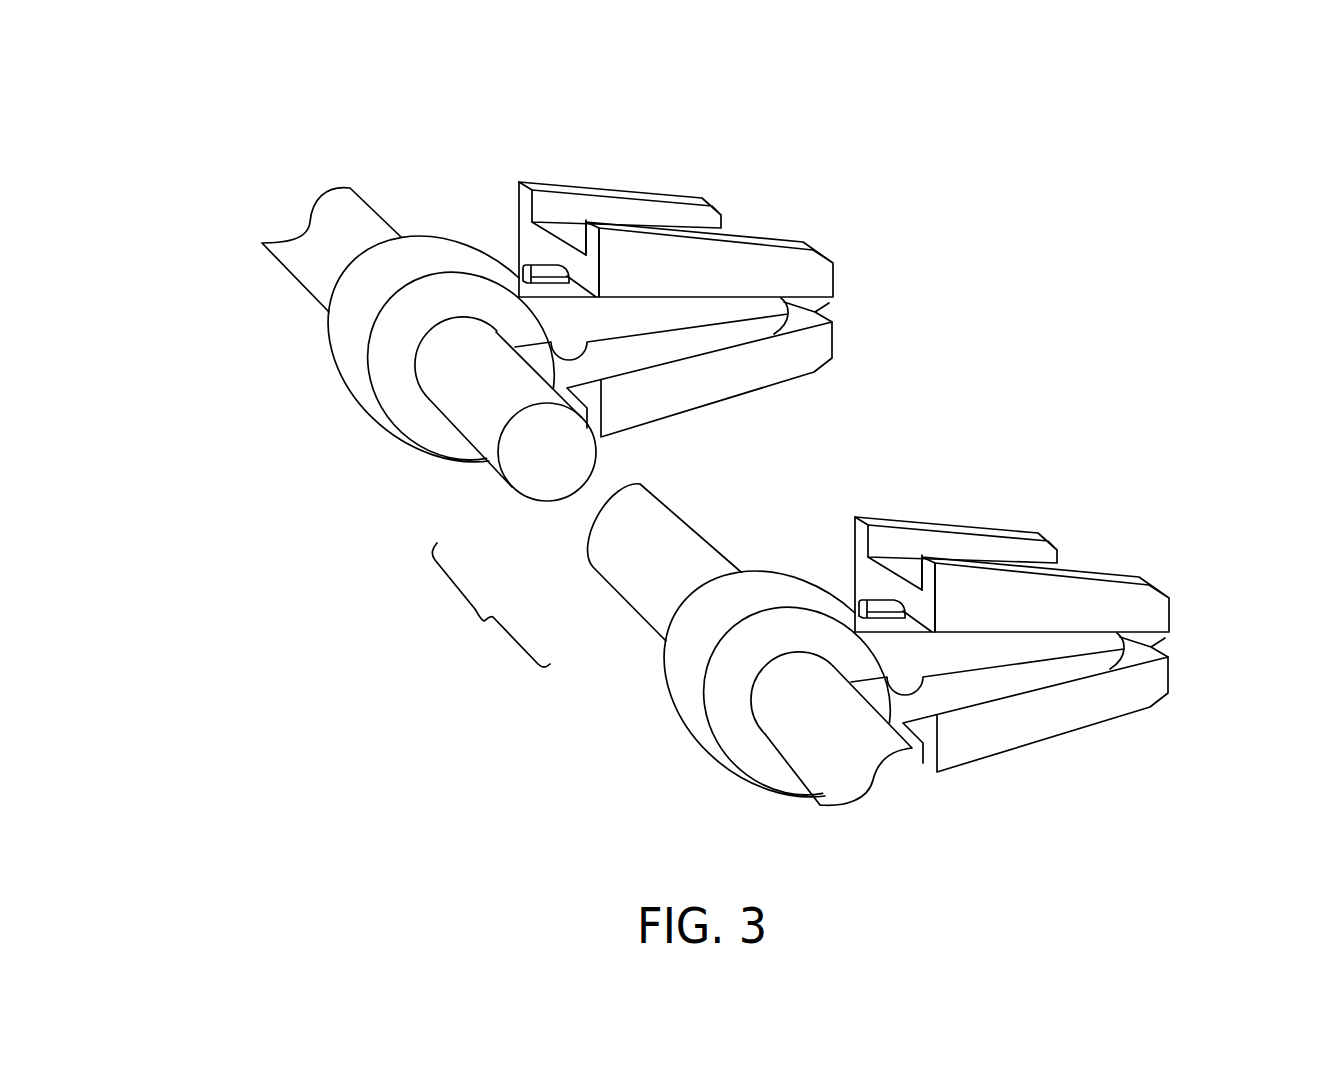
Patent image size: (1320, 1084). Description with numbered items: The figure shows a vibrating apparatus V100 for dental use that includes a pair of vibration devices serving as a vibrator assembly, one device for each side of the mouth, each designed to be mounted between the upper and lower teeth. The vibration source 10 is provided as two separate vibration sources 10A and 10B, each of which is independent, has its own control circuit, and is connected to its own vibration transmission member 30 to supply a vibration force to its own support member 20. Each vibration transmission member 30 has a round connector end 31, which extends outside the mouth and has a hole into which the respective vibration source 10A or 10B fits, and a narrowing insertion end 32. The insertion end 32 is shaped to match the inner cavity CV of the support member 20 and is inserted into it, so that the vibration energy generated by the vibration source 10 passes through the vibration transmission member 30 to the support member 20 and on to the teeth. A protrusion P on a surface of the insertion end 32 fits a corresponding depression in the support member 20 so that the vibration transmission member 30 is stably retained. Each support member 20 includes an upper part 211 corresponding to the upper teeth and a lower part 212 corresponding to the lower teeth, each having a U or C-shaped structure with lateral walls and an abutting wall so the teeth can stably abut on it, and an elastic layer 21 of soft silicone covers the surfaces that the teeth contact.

The vibrating apparatus V100 is at (190, 85).
The vibration source 10 is at (491, 605).
The separate vibration source 10A is at (525, 478).
The separate vibration source 10B is at (610, 563).
The support member 20 is at (758, 213).
The elastic layer 21 is at (625, 190).
The upper part 211 is at (526, 197).
The lower part 212 is at (592, 397).
The vibration transmission member 30 is at (283, 192).
The connector end 31 is at (347, 340).
The insertion end 32 is at (750, 332).
The protrusion P is at (523, 264).
The inner cavity CV is at (835, 306).